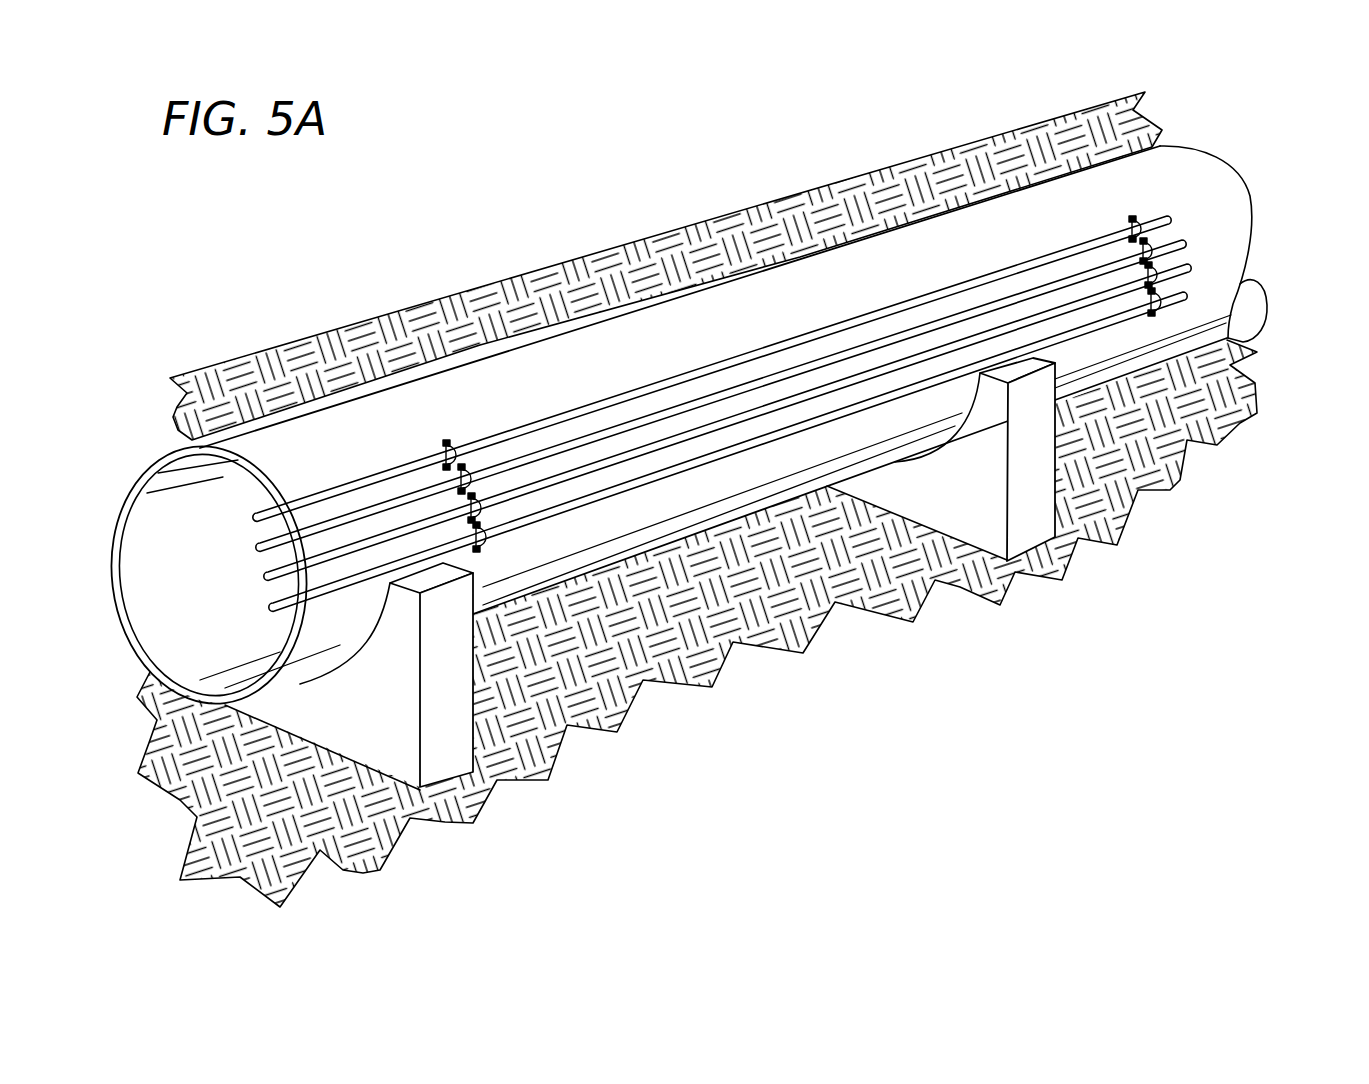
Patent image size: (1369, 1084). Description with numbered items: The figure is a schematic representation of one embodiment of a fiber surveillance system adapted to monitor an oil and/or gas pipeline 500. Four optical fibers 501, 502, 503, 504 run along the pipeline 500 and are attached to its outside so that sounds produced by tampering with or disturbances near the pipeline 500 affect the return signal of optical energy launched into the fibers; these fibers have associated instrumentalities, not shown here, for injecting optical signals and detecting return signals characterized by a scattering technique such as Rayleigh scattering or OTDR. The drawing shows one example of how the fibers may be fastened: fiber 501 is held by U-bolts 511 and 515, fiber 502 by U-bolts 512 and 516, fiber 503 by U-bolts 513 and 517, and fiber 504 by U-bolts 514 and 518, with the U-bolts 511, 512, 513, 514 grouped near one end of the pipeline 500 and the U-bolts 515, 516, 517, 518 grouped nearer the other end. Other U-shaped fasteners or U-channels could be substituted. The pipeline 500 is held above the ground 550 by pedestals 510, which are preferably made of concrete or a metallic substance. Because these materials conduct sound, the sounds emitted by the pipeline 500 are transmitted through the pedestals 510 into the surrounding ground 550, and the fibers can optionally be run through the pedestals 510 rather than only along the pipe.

The pipeline 500 is at (128, 472).
The fiber 501 is at (545, 417).
The fiber 502 is at (598, 430).
The fiber 503 is at (655, 447).
The fiber 504 is at (712, 457).
The pedestals 510 is at (447, 757).
The U-bolt 511 is at (1145, 223).
The U-bolt 512 is at (1153, 247).
The U-bolt 513 is at (1160, 273).
The U-bolt 514 is at (1160, 303).
The U-bolt 515 is at (447, 443).
The U-bolt 516 is at (460, 473).
The U-bolt 517 is at (470, 500).
The U-bolt 518 is at (473, 533).
The ground 550 is at (686, 649).